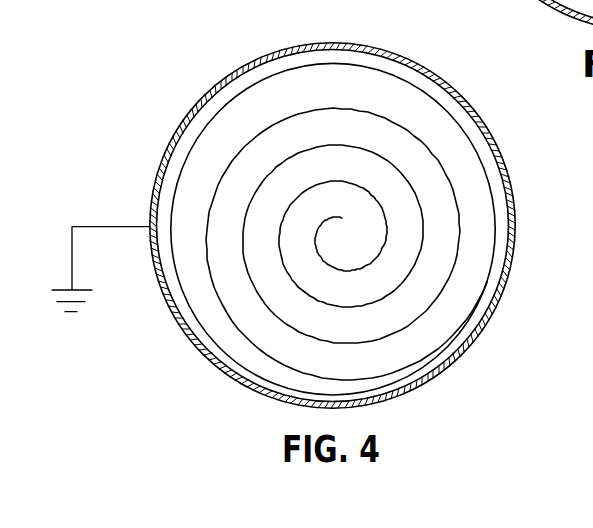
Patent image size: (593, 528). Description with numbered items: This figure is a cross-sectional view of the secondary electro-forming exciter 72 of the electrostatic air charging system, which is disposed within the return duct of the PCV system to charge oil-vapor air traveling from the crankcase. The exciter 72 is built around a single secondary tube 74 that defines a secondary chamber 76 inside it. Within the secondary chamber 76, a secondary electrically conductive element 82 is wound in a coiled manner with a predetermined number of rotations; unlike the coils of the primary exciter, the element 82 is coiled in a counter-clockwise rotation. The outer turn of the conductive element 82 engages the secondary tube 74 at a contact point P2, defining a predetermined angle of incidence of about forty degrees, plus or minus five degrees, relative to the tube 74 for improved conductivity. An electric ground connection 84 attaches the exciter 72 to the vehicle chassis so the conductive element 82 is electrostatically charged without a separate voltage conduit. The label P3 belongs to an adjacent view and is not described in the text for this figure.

The secondary electro-forming exciter 72 is at (286, 204).
The secondary tube 74 is at (229, 81).
The secondary chamber 76 is at (204, 114).
The secondary electrically conductive element 82 is at (283, 70).
The electric ground connection 84 is at (110, 227).
The contact point P2 is at (465, 343).
The pressure region P3 is at (465, 0).